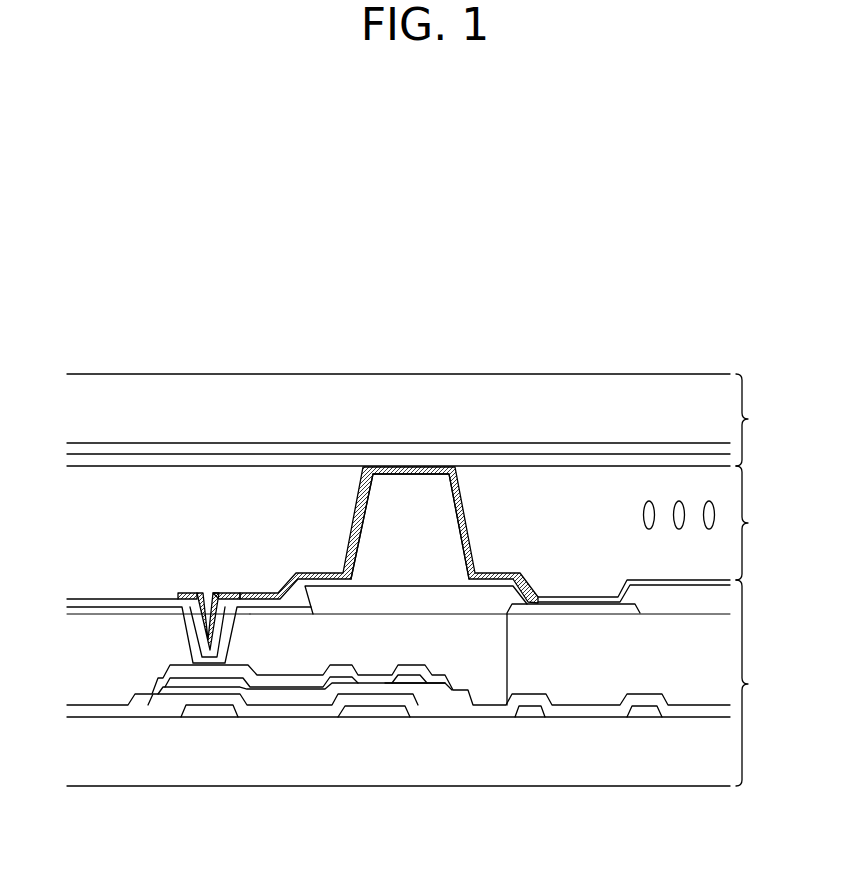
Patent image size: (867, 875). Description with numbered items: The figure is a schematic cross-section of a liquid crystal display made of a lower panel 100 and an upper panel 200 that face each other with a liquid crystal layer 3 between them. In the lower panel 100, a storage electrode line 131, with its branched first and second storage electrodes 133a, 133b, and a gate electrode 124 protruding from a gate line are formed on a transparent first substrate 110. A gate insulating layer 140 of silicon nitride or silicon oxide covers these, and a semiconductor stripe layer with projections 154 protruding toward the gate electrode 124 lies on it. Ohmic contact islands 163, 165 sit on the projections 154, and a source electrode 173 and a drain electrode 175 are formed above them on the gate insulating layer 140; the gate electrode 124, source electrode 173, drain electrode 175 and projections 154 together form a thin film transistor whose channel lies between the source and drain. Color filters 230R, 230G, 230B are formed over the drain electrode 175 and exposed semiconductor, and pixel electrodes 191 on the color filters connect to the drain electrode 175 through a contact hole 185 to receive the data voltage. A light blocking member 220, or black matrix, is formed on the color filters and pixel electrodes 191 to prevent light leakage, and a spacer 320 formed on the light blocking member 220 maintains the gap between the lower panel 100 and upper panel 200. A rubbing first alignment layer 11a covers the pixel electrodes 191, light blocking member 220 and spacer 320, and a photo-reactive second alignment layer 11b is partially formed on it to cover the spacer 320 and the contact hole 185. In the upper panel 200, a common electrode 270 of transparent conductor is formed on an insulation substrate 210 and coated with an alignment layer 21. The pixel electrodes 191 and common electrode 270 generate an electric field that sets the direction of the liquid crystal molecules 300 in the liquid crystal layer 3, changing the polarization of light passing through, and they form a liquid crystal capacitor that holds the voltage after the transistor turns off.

The spacer 320 is at (390, 495).
The insulation substrate 210 is at (500, 388).
The common electrode 270 is at (597, 448).
The upper panel 200 is at (764, 420).
The alignment layer 21 is at (107, 460).
The liquid crystal molecules 300 is at (640, 513).
The liquid crystal layer 3 is at (763, 523).
The color filter 230R is at (93, 633).
The pixel electrode 191 is at (150, 607).
The second alignment layer 11b is at (188, 594).
The contact hole 185 is at (213, 645).
The light blocking member 220 is at (496, 598).
The first alignment layer 11a is at (592, 597).
The lower panel 100 is at (764, 683).
The gate insulating layer 140 is at (115, 710).
The projections 154 is at (192, 708).
The storage electrode line 131 is at (212, 712).
The ohmic contact island 165 is at (260, 682).
The color filter 230G is at (288, 653).
The drain electrode 175 is at (315, 681).
The gate electrode 124 is at (375, 712).
The source electrode 173 is at (428, 677).
The ohmic contact island 163 is at (440, 688).
The first storage electrode 133a is at (528, 712).
The color filter 230B is at (583, 680).
The second storage electrode 133b is at (643, 712).
The first substrate 110 is at (699, 762).